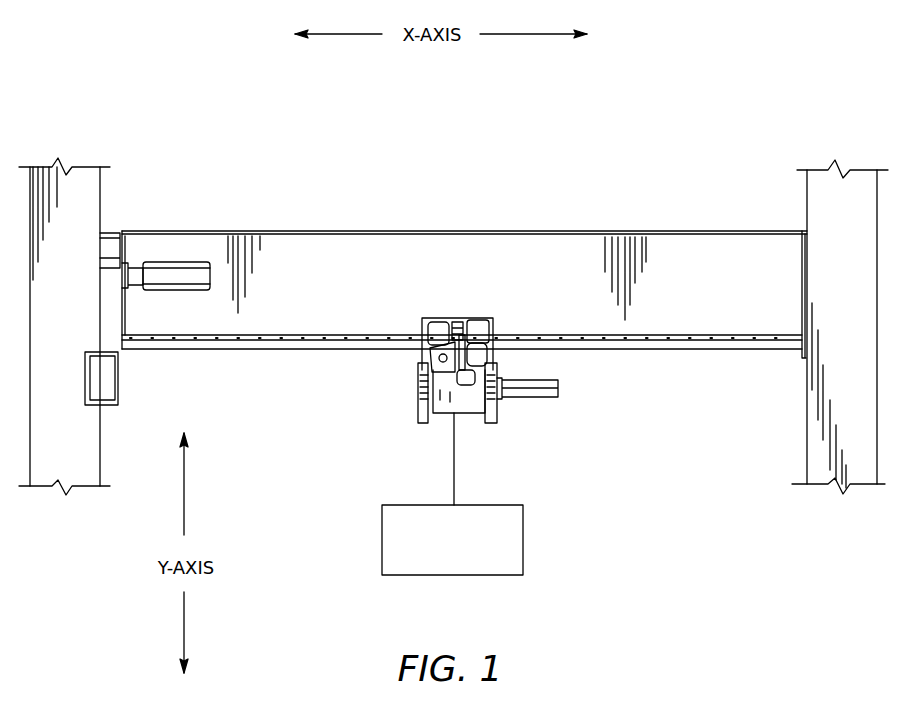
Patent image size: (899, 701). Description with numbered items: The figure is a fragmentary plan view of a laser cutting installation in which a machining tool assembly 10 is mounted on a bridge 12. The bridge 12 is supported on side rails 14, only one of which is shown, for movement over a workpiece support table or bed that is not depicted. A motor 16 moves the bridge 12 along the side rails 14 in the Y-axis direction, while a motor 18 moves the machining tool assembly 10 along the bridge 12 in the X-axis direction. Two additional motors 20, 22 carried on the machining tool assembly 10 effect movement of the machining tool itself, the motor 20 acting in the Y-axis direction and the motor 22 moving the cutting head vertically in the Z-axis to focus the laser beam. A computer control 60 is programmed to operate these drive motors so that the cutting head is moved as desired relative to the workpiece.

The machining tool assembly 10 is at (468, 318).
The bridge 12 is at (312, 246).
The side rail 14 is at (100, 204).
The motor 16 is at (185, 262).
The motor 18 is at (437, 324).
The motor 20 is at (486, 323).
The motor 22 is at (558, 388).
The computer control 60 is at (430, 576).